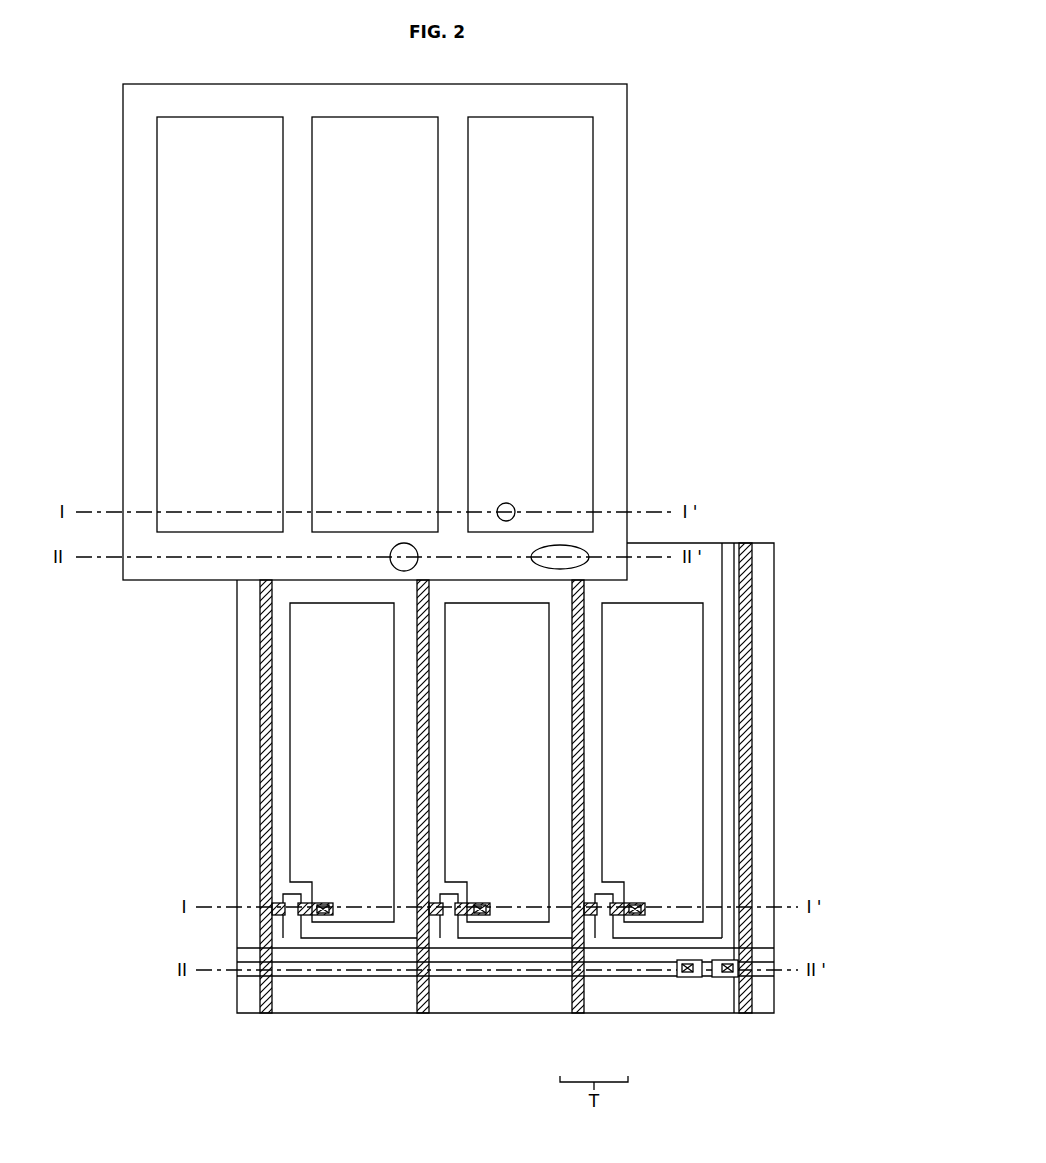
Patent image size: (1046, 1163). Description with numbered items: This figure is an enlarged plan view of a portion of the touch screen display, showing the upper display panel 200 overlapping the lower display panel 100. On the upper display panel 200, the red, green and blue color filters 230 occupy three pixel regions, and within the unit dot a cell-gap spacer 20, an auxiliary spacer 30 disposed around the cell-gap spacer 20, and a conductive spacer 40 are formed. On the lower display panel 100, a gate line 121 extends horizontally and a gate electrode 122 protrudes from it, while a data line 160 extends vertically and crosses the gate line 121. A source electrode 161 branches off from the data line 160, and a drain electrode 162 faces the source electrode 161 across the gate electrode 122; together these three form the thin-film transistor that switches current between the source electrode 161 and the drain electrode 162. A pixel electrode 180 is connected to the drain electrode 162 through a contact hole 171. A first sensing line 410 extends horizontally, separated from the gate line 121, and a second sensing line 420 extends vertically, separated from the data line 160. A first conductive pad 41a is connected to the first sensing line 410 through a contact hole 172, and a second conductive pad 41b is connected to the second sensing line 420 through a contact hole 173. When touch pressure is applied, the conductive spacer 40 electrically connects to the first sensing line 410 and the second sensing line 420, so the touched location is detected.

The upper display panel 200 is at (658, 101).
The R, G and B color filters 230 is at (172, 218).
The cell-gap spacer 20 is at (514, 504).
The conductive spacer 40 is at (558, 548).
The auxiliary spacer 30 is at (392, 563).
The lower display panel 100 is at (805, 559).
The pixel electrode 180 is at (316, 698).
The data line 160 is at (752, 748).
The second sensing line 420 is at (735, 809).
The first sensing line 410 is at (253, 977).
The contact hole 171 is at (636, 904).
The gate line 121 is at (246, 945).
The gate electrode 122 is at (604, 940).
The source electrode 161 is at (592, 918).
The drain electrode 162 is at (623, 924).
The contact hole 172 is at (681, 978).
The contact hole 173 is at (720, 978).
The first conductive pad 41a is at (691, 978).
The second conductive pad 41b is at (731, 978).